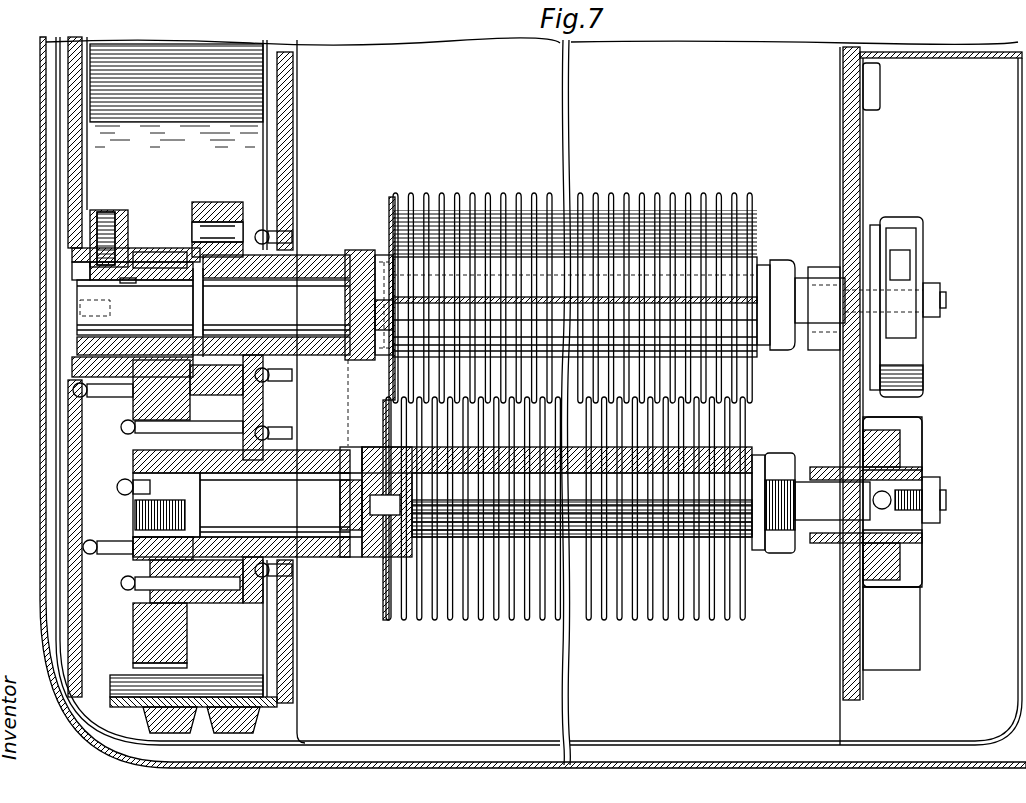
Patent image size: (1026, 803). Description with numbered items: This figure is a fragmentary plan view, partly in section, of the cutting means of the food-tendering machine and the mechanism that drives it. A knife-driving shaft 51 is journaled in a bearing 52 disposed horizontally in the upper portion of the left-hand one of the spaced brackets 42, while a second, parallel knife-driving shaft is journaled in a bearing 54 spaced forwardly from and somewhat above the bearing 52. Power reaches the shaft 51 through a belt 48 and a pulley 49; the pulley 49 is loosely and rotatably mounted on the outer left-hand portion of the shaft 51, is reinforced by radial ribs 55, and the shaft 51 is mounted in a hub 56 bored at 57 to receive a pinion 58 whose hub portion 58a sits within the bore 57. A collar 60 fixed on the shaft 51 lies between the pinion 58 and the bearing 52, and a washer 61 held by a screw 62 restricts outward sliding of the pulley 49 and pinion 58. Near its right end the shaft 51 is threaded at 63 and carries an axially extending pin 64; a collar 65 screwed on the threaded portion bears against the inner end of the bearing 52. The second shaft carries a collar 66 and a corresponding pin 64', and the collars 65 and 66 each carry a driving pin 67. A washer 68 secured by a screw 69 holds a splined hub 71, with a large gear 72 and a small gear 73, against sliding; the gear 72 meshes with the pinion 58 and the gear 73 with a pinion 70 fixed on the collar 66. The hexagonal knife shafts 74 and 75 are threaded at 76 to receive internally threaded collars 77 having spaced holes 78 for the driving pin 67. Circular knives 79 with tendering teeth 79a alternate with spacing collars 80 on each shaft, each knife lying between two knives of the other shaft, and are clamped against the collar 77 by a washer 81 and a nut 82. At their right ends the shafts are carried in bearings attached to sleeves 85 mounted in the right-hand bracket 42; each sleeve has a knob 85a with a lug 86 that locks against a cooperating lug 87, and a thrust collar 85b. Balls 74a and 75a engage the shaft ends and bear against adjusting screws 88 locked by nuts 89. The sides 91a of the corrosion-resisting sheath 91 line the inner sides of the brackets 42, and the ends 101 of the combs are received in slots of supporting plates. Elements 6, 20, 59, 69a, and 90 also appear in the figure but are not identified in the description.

The casing wall 6 is at (68, 205).
The direction arrow 20 is at (880, 187).
The brackets 42 is at (293, 85).
The belt 48 is at (262, 722).
The pulley 49 is at (85, 80).
The knife-driving shaft 51 is at (150, 254).
The bearing 52 is at (310, 255).
The bearing 54 is at (314, 440).
The radial ribs 55 is at (88, 145).
The hub 56 is at (133, 410).
The bore 57 is at (72, 253).
The pinion 58 is at (90, 214).
The hub portion 58a is at (112, 345).
The plate 59 is at (72, 266).
The collar 60 is at (218, 296).
The washer 61 is at (72, 272).
The screw 62 is at (78, 305).
The threaded portion 63 is at (262, 500).
The axially extending pin 64 is at (379, 286).
The axially extending pin 64' is at (405, 502).
The collar 65 is at (352, 250).
The collar 66 is at (350, 558).
The driving pin 67 is at (398, 212).
The washer 68 is at (135, 515).
The screw 69 is at (117, 487).
The collar 69a is at (420, 213).
The pinion 70 is at (212, 205).
The hub 71 is at (133, 560).
The large gear 72 is at (187, 640).
The small gear 73 is at (232, 603).
The knife shaft 74 is at (800, 278).
The ball 74a is at (922, 310).
The knife shaft 75 is at (812, 480).
The ball 75a is at (900, 517).
The externally threaded portion 76 is at (352, 362).
The collar 77 is at (378, 357).
The holes 78 is at (390, 215).
The knives 79 is at (735, 205).
The tendering teeth 79a is at (660, 200).
The spacing collars 80 is at (637, 250).
The washer 81 is at (765, 262).
The nut 82 is at (778, 260).
The sleeves 85 is at (880, 270).
The knob 85a is at (925, 268).
The thrust collar 85b is at (925, 450).
The lug 86 is at (874, 225).
The cooperating lug 87 is at (900, 218).
The adjusting screws 88 is at (946, 300).
The nuts 89 is at (940, 290).
The outer casing 90 is at (40, 460).
The sheath 91 is at (516, 664).
The sides of sheath 91a is at (297, 120).
The ends of combs 101 is at (465, 300).